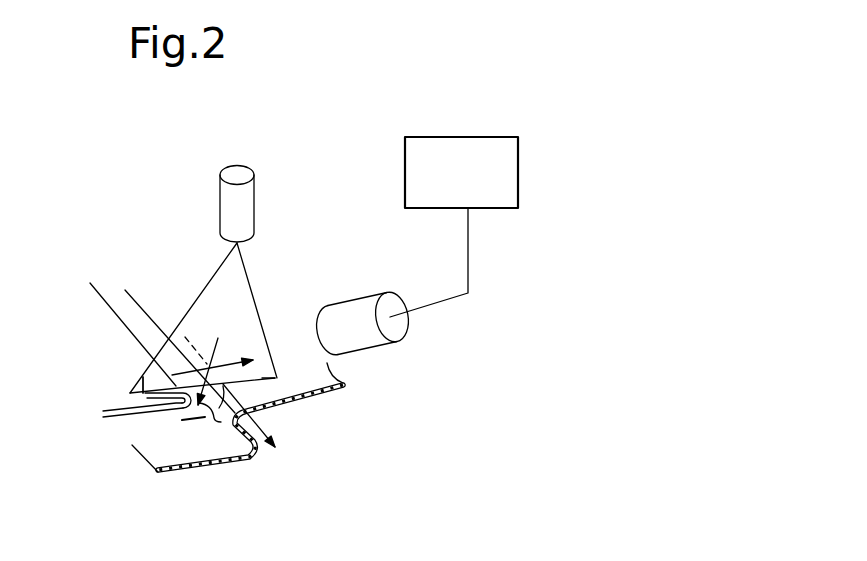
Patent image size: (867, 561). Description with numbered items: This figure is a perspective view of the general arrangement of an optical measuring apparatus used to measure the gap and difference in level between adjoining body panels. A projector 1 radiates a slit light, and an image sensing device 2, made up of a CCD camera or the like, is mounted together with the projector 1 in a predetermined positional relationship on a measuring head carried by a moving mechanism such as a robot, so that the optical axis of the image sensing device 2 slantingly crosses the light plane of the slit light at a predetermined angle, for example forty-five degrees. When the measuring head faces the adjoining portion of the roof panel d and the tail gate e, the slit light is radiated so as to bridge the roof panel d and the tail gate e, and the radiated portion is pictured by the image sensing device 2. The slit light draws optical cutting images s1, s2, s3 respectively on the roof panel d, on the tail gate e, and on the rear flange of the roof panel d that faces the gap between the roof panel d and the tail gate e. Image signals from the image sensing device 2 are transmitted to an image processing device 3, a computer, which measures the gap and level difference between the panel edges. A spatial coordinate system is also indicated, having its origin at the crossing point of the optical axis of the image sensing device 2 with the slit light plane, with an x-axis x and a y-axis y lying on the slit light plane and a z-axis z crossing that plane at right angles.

The projector 1 is at (222, 207).
The image sensing device 2 is at (370, 341).
The image processing device 3 is at (450, 148).
The roof panel d is at (322, 398).
The tail gate e is at (113, 418).
The optical cutting image s1 is at (262, 378).
The optical cutting image s2 is at (139, 374).
The optical cutting image s3 is at (198, 430).
The x-axis x is at (213, 391).
The y-axis y is at (214, 342).
The z-axis z is at (241, 401).